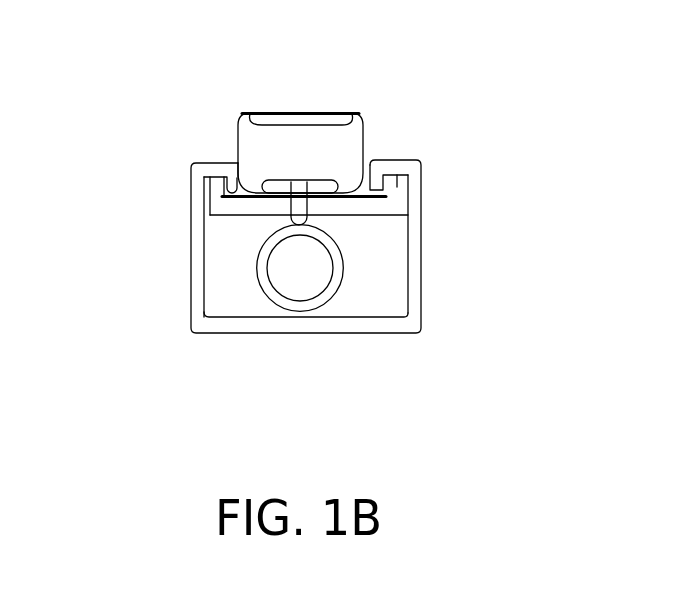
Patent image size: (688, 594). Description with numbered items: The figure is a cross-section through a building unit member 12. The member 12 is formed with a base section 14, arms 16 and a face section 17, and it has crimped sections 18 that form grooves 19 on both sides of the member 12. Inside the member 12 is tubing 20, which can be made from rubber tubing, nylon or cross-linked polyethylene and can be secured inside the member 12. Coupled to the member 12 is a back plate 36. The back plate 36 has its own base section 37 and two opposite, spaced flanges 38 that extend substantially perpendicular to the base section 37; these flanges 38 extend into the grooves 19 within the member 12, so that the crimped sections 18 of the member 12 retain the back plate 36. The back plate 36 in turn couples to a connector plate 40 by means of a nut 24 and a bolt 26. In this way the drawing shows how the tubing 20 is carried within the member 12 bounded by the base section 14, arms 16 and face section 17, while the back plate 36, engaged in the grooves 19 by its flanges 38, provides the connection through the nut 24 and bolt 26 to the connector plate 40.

The member 12 is at (195, 121).
The base section 14 is at (228, 325).
The arms 16 is at (199, 256).
The face section 17 is at (405, 166).
The crimped sections 18 is at (204, 177).
The grooves 19 is at (414, 265).
The tubing 20 is at (337, 288).
The nut 24 is at (280, 187).
The bolt 26 is at (302, 212).
The back plate 36 is at (408, 187).
The base section 37 is at (258, 217).
The flanges 38 is at (218, 191).
The connector plate 40 is at (347, 136).